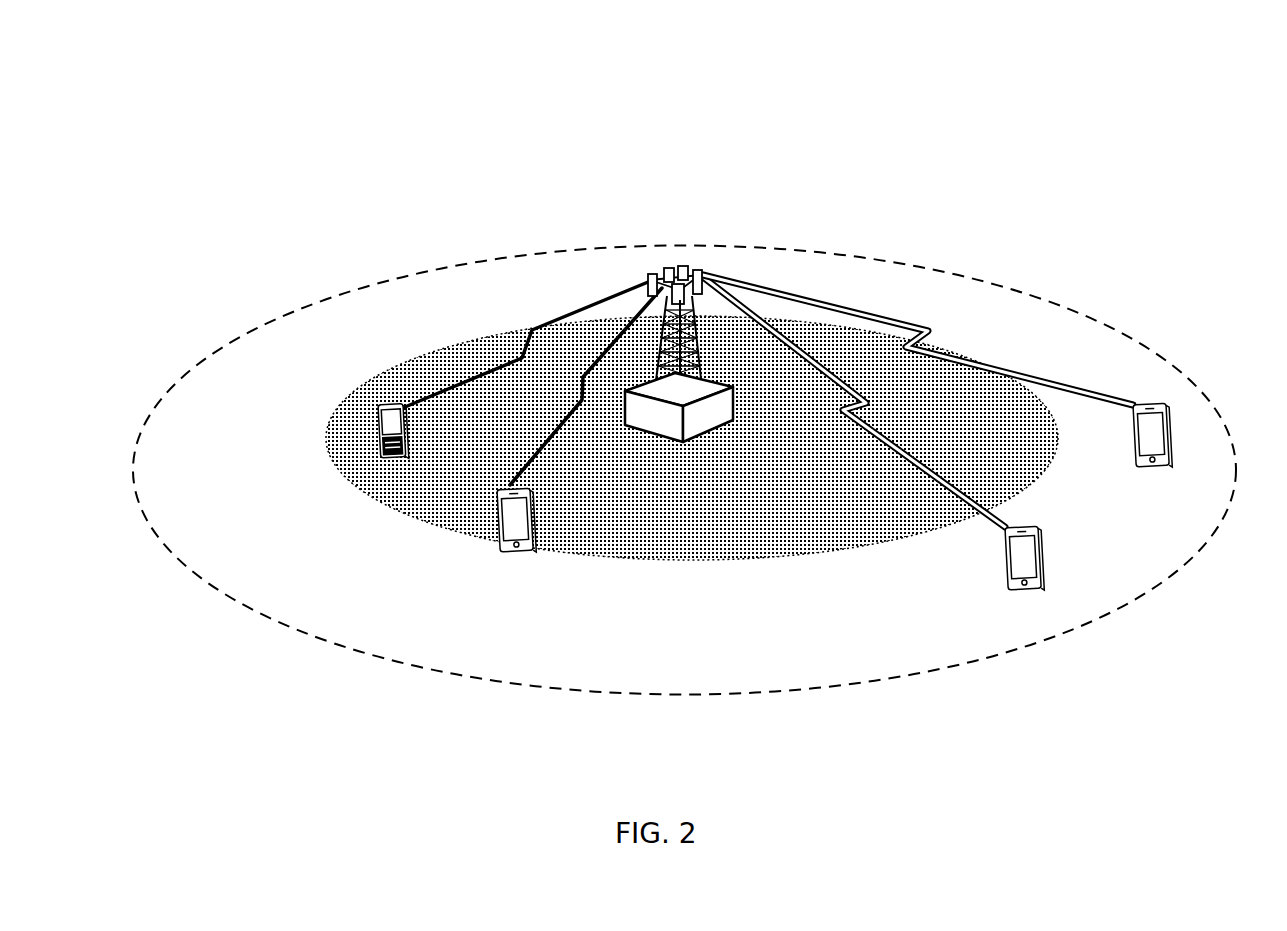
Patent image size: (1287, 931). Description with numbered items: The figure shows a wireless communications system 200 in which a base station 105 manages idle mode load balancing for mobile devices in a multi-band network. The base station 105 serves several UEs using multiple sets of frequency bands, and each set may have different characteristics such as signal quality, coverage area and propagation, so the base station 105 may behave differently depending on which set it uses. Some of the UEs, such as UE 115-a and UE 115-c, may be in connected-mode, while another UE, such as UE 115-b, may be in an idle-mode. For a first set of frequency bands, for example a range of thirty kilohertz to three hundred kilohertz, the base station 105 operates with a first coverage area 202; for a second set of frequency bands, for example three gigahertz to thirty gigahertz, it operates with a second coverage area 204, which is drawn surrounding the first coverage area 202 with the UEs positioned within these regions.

The system 200 is at (1204, 95).
The base station 105 is at (653, 440).
The UE 115-a is at (405, 458).
The UE 115-b is at (500, 546).
The UE 115-c is at (1018, 588).
The first coverage area 202 is at (1033, 486).
The second coverage area 204 is at (1196, 558).